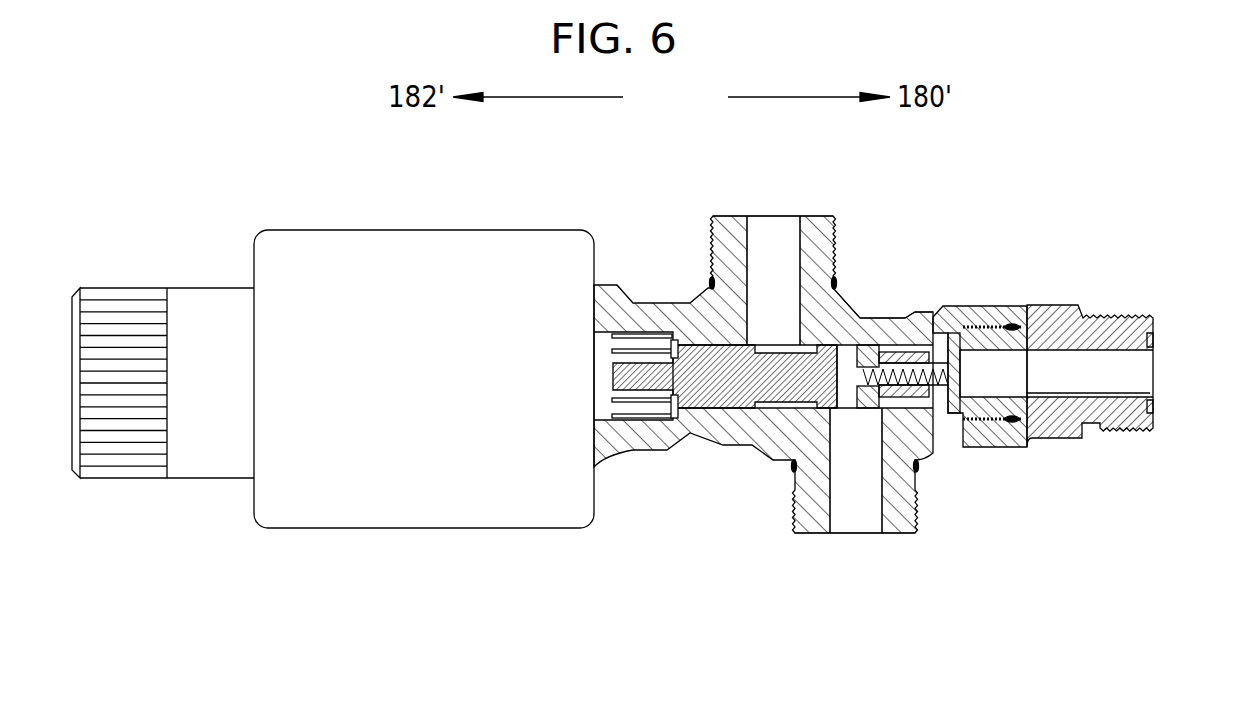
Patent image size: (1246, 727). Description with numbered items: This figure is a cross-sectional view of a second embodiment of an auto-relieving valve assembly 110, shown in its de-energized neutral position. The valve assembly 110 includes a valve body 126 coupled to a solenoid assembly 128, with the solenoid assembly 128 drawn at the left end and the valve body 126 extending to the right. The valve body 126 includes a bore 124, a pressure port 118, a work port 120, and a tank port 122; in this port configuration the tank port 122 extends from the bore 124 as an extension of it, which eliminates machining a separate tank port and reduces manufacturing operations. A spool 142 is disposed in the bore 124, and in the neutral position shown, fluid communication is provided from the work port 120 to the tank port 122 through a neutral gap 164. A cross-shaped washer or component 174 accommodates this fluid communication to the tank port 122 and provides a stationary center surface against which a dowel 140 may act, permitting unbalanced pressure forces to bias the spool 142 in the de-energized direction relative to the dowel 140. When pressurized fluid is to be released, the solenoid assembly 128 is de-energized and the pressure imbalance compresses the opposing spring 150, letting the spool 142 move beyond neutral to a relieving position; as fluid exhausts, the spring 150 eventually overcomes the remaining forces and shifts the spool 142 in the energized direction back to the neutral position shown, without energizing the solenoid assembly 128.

The valve assembly 110 is at (612, 204).
The pressure port 118 is at (775, 217).
The work port 120 is at (848, 533).
The tank port 122 is at (1155, 373).
The bore 124 is at (690, 303).
The valve body 126 is at (858, 317).
The solenoid assembly 128 is at (422, 520).
The dowel 140 is at (957, 443).
The spool 142 is at (770, 397).
The opposing spring 150 is at (668, 412).
The neutral gap 164 is at (877, 417).
The cross-shaped component 174 is at (970, 327).